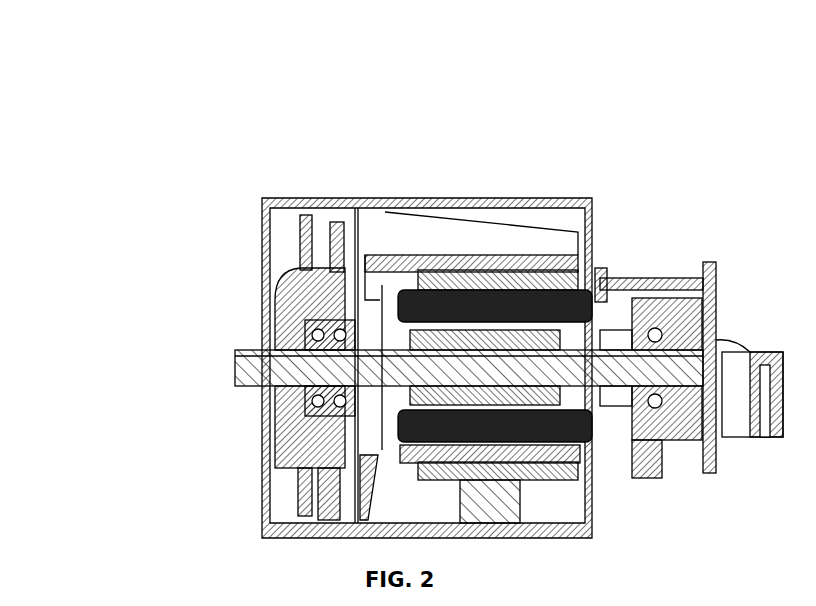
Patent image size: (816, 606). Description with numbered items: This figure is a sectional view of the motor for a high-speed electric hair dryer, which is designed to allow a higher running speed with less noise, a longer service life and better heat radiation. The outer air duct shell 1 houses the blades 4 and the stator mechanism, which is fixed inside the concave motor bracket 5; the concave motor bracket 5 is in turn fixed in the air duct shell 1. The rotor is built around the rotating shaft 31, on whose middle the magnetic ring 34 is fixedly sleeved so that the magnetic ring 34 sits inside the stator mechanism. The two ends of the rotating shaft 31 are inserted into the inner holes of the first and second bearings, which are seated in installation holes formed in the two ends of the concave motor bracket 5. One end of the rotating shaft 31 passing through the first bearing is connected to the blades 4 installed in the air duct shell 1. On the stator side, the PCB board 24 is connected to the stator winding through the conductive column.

The air duct shell 1 is at (339, 288).
The blades 4 is at (217, 327).
The concave motor bracket 5 is at (415, 270).
The rotating shaft 31 is at (358, 327).
The magnetic ring 34 is at (458, 211).
The PCB board 24 is at (701, 262).